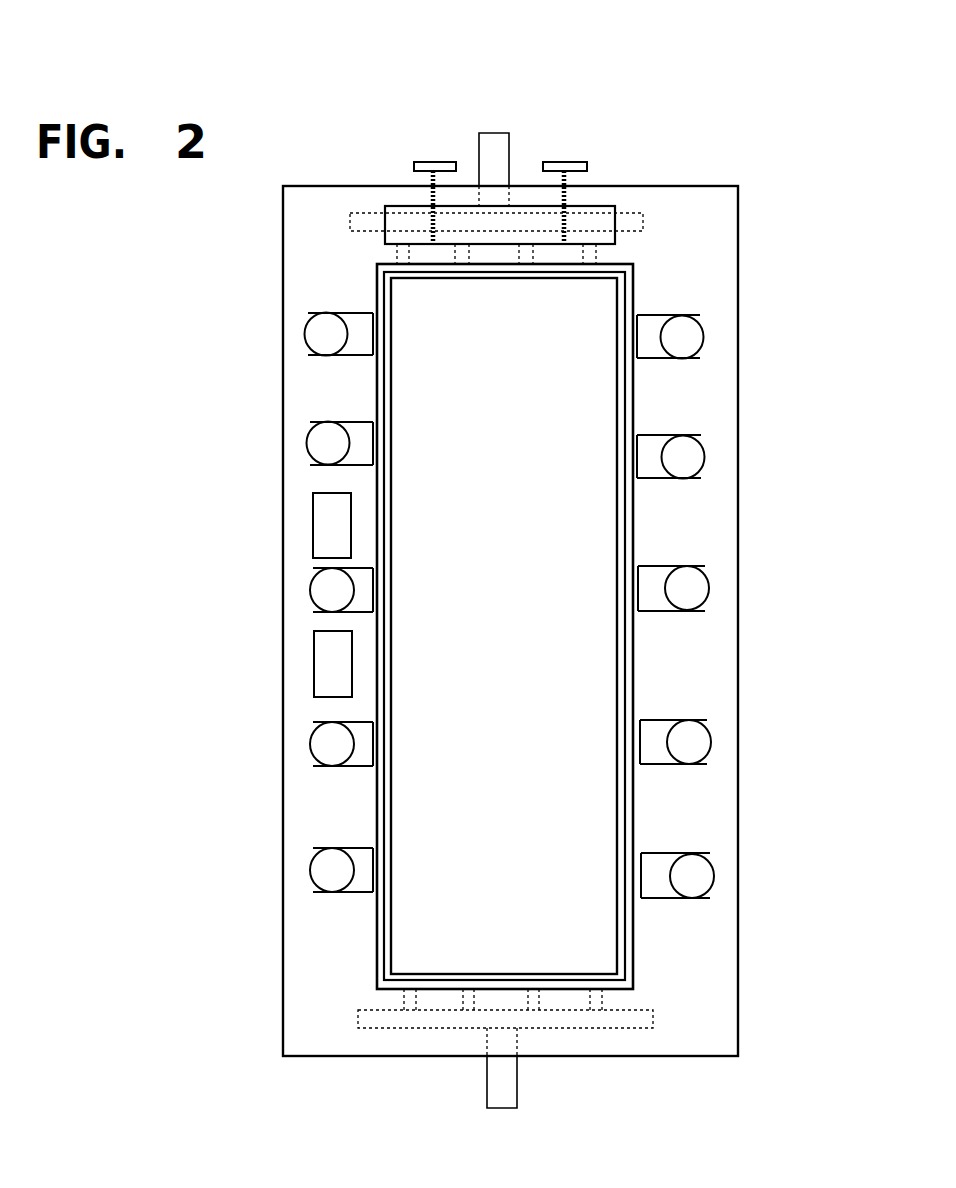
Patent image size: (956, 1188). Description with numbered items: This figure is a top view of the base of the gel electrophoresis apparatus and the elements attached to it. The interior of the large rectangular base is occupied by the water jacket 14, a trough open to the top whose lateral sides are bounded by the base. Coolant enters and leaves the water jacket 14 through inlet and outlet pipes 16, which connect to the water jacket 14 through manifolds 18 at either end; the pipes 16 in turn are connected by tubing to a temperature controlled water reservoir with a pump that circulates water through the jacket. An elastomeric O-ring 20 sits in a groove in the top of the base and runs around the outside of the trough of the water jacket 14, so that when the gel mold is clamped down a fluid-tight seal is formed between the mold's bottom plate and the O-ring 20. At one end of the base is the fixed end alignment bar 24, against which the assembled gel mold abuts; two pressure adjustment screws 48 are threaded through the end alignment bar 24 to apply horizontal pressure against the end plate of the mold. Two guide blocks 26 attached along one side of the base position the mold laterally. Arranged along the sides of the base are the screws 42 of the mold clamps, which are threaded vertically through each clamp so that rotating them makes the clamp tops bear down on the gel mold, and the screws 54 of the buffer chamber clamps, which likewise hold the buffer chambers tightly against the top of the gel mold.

The water jacket 14 is at (505, 427).
The inlet and outlet pipes 16 is at (490, 157).
The manifolds 18 is at (637, 1017).
The O-ring 20 is at (378, 394).
The end alignment bar 24 is at (607, 236).
The guide blocks 26 is at (323, 512).
The screws 42 is at (327, 583).
The pressure adjustment screws 48 is at (422, 165).
The screws 54 is at (683, 328).